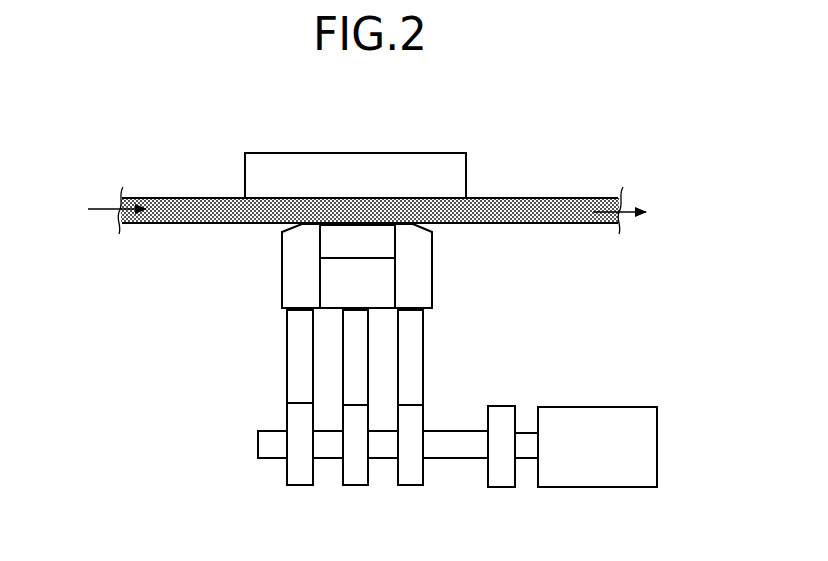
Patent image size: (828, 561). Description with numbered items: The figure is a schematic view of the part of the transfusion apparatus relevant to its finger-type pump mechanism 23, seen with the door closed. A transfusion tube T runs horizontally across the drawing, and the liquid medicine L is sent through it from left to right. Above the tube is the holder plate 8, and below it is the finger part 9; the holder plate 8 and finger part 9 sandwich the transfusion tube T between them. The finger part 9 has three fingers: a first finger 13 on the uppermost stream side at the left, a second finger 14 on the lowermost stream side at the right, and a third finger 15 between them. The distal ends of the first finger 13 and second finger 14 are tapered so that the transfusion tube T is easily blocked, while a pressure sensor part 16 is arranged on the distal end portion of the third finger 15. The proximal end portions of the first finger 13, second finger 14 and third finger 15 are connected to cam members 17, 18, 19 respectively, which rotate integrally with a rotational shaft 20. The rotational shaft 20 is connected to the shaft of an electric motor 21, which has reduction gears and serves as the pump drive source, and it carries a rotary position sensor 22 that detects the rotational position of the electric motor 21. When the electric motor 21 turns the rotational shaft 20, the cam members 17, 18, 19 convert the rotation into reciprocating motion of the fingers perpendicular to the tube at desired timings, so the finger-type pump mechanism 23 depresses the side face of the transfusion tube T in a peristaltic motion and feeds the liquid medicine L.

The transfusion tube T is at (575, 198).
The liquid medicine L is at (101, 198).
The holder plate 8 is at (433, 153).
The finger part 9 is at (356, 219).
The first finger 13 is at (282, 268).
The second finger 14 is at (432, 268).
The third finger 15 is at (347, 268).
The pressure sensor part 16 is at (375, 242).
The cam member 17 is at (301, 485).
The cam member 18 is at (411, 485).
The cam member 19 is at (356, 485).
The rotational shaft 20 is at (452, 431).
The electric motor 21 is at (594, 407).
The rotary position sensor 22 is at (498, 406).
The finger-type pump mechanism 23 is at (425, 433).